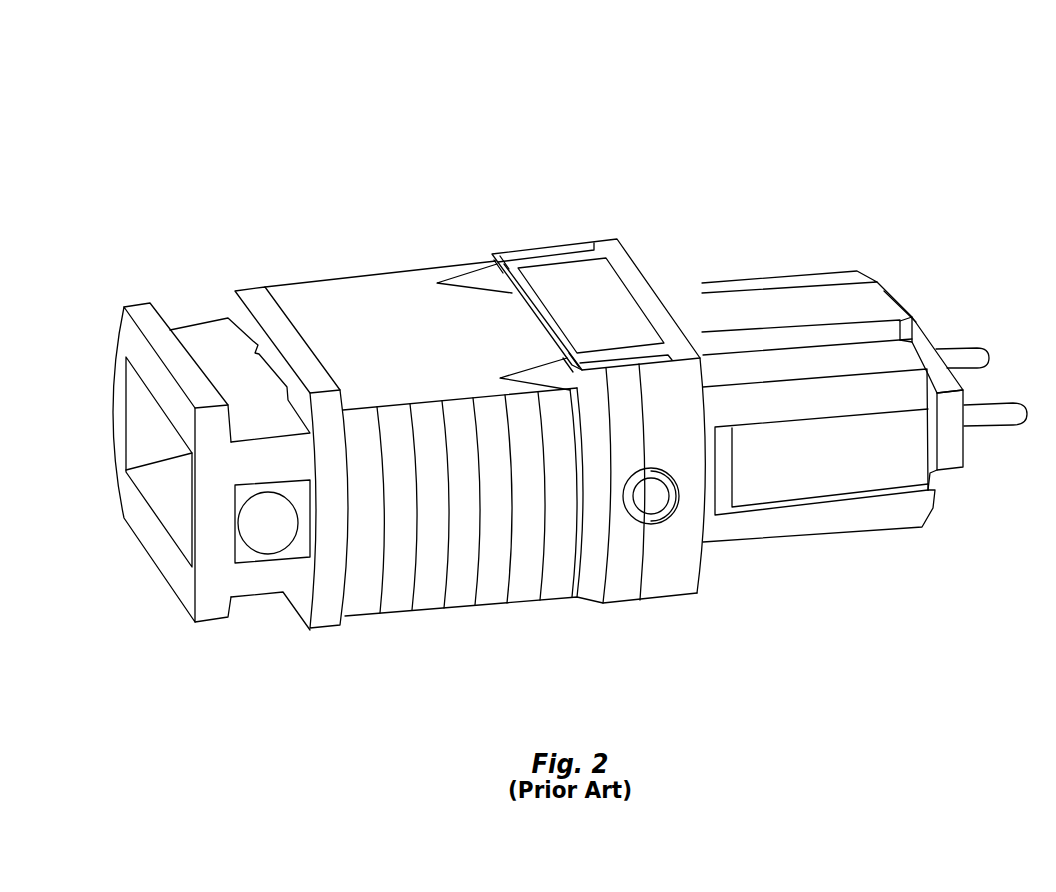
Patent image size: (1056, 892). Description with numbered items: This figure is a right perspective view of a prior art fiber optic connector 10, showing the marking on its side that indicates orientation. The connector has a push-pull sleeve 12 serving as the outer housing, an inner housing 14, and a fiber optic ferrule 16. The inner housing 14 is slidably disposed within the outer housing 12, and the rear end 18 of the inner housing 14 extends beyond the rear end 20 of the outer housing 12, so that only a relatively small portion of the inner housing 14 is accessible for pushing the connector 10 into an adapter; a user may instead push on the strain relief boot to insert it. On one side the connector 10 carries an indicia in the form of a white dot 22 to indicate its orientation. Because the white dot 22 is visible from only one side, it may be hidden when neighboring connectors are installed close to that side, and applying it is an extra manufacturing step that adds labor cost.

The fiber optic connector 10 is at (557, 150).
The push-pull sleeve 12 is at (490, 610).
The inner housing 14 is at (198, 318).
The fiber optic ferrule 16 is at (950, 473).
The rear end of the inner housing 18 is at (212, 623).
The rear end of the outer housing 20 is at (317, 631).
The white dot 22 is at (258, 542).